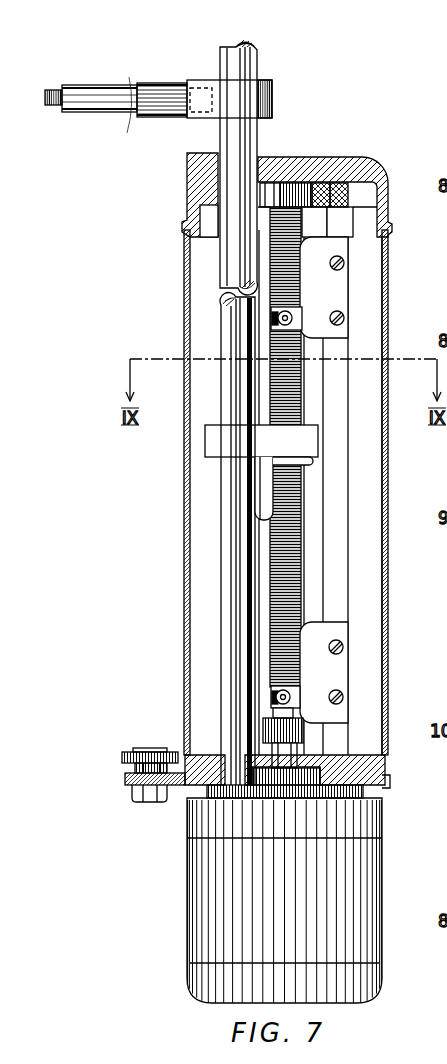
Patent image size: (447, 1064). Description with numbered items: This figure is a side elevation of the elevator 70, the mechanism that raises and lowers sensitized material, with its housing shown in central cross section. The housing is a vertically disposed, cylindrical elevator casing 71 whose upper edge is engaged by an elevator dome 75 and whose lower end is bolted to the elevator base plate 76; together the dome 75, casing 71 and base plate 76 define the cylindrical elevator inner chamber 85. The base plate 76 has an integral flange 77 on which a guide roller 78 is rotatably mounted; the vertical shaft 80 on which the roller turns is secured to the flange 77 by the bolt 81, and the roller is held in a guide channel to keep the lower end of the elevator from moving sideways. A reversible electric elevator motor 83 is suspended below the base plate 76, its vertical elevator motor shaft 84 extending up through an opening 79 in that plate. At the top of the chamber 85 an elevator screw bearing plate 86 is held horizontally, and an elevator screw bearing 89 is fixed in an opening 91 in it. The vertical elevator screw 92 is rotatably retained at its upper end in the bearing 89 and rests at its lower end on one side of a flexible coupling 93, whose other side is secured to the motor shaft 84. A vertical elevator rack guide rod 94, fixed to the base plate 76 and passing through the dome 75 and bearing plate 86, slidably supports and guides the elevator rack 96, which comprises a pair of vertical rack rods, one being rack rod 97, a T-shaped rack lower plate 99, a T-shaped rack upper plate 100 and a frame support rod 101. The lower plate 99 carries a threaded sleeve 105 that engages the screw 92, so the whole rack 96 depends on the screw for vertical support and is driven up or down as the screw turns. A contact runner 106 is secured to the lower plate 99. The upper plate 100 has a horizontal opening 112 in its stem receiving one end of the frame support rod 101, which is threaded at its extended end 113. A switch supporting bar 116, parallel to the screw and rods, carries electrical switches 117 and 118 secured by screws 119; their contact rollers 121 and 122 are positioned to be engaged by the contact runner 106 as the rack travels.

The elevator 70 is at (312, 162).
The elevator casing 71 is at (387, 293).
The elevator dome 75 is at (372, 173).
The elevator base plate 76 is at (373, 777).
The flange 77 is at (128, 780).
The guide roller 78 is at (133, 755).
The opening 79 is at (268, 778).
The vertical shaft 80 is at (137, 770).
The bolt 81 is at (138, 795).
The electric elevator motor 83 is at (205, 922).
The elevator motor shaft 84 is at (278, 772).
The elevator inner chamber 85 is at (367, 557).
The elevator screw bearing plate 86 is at (327, 193).
The elevator screw bearing 89 is at (302, 195).
The opening 91 is at (273, 185).
The elevator screw 92 is at (273, 542).
The flexible coupling 93 is at (277, 728).
The elevator rack guide rod 94 is at (227, 598).
The elevator rack 96 is at (258, 72).
The rack rod 97 is at (230, 127).
The rack lower plate 99 is at (213, 440).
The rack upper plate 100 is at (262, 90).
The frame support rod 101 is at (155, 102).
The threaded sleeve 105 is at (313, 462).
The contact runner 106 is at (263, 483).
The horizontal opening 112 is at (197, 75).
The extended end 113 is at (53, 105).
The switch supporting bar 116 is at (337, 438).
The electrical switch 117 is at (332, 287).
The electrical switch 118 is at (330, 667).
The screws 119 is at (352, 317).
The contact roller 121 is at (285, 318).
The contact roller 122 is at (275, 692).